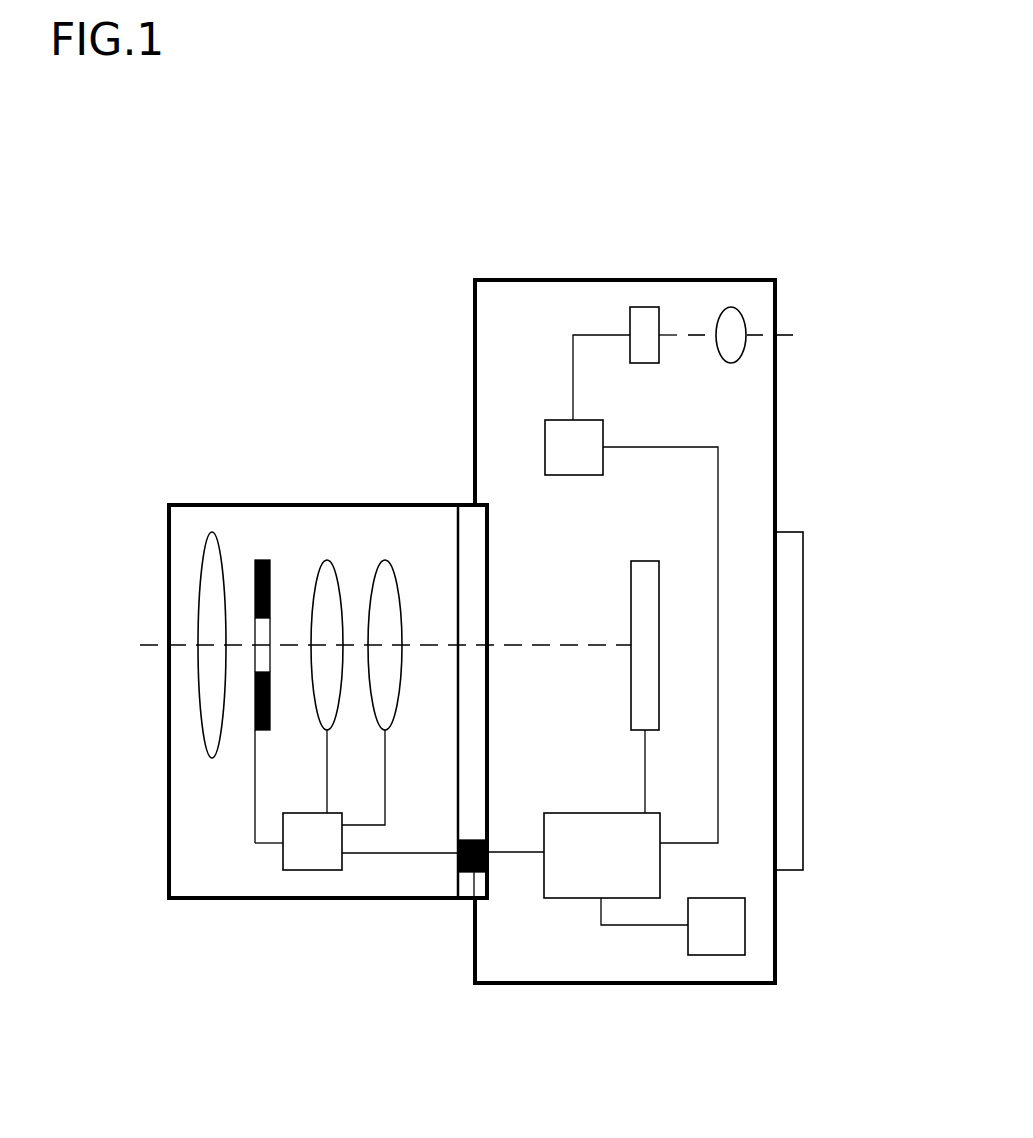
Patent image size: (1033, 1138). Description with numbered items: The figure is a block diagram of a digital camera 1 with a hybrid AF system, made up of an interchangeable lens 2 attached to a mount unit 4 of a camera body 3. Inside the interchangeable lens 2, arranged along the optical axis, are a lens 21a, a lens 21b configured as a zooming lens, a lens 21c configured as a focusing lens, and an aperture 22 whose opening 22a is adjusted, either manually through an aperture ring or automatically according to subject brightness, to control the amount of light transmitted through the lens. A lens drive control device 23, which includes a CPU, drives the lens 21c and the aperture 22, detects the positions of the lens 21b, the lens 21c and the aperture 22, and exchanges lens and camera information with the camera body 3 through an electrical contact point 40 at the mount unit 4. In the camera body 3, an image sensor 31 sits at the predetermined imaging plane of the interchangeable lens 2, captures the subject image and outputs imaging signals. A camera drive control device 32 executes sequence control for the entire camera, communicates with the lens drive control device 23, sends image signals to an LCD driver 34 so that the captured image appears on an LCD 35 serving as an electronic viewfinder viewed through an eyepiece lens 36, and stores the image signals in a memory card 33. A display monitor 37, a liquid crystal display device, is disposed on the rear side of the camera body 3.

The digital camera 1 is at (190, 273).
The interchangeable lens 2 is at (175, 503).
The camera body 3 is at (492, 278).
The mount unit 4 is at (473, 530).
The lens 21a is at (222, 540).
The lens 21b is at (328, 562).
The lens 21c is at (385, 560).
The aperture 22 is at (267, 558).
The opening 22a is at (272, 613).
The lens drive control device 23 is at (310, 870).
The image sensor 31 is at (631, 588).
The camera drive control device 32 is at (573, 898).
The memory card 33 is at (718, 955).
The LCD driver 34 is at (545, 420).
The LCD 35 is at (630, 307).
The eyepiece lens 36 is at (725, 307).
The display monitor 37 is at (790, 532).
The electrical contact point 40 is at (465, 885).